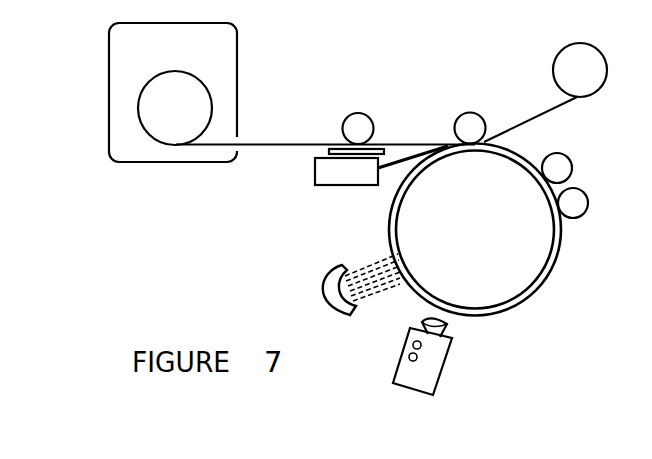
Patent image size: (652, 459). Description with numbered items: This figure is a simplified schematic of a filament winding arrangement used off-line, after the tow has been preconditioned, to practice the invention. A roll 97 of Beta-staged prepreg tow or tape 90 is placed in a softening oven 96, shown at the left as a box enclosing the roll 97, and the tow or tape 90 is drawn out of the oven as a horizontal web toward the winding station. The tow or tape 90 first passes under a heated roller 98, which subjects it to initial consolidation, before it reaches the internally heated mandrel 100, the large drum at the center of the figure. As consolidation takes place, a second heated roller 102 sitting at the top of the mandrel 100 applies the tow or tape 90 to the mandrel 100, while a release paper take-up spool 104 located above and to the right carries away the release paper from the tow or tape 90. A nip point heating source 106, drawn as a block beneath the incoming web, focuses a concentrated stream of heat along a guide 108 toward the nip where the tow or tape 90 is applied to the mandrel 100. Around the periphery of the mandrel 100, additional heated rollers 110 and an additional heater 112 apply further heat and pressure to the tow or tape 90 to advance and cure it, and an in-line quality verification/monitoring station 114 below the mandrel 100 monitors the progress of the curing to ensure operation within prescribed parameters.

The tow or tape 90 is at (265, 143).
The softening oven 96 is at (238, 62).
The supply roll 97 is at (188, 118).
The heated roller 98 is at (358, 113).
The internally heated mandrel 100 is at (495, 238).
The heated roller 102 is at (470, 112).
The release paper take-up spool 104 is at (571, 44).
The nip point heating source 106 is at (348, 186).
The guide plate 108 is at (391, 166).
The additional heated rollers 110 is at (564, 154).
The additional heaters 112 is at (322, 287).
The in-line quality verification/monitoring station 114 is at (450, 357).